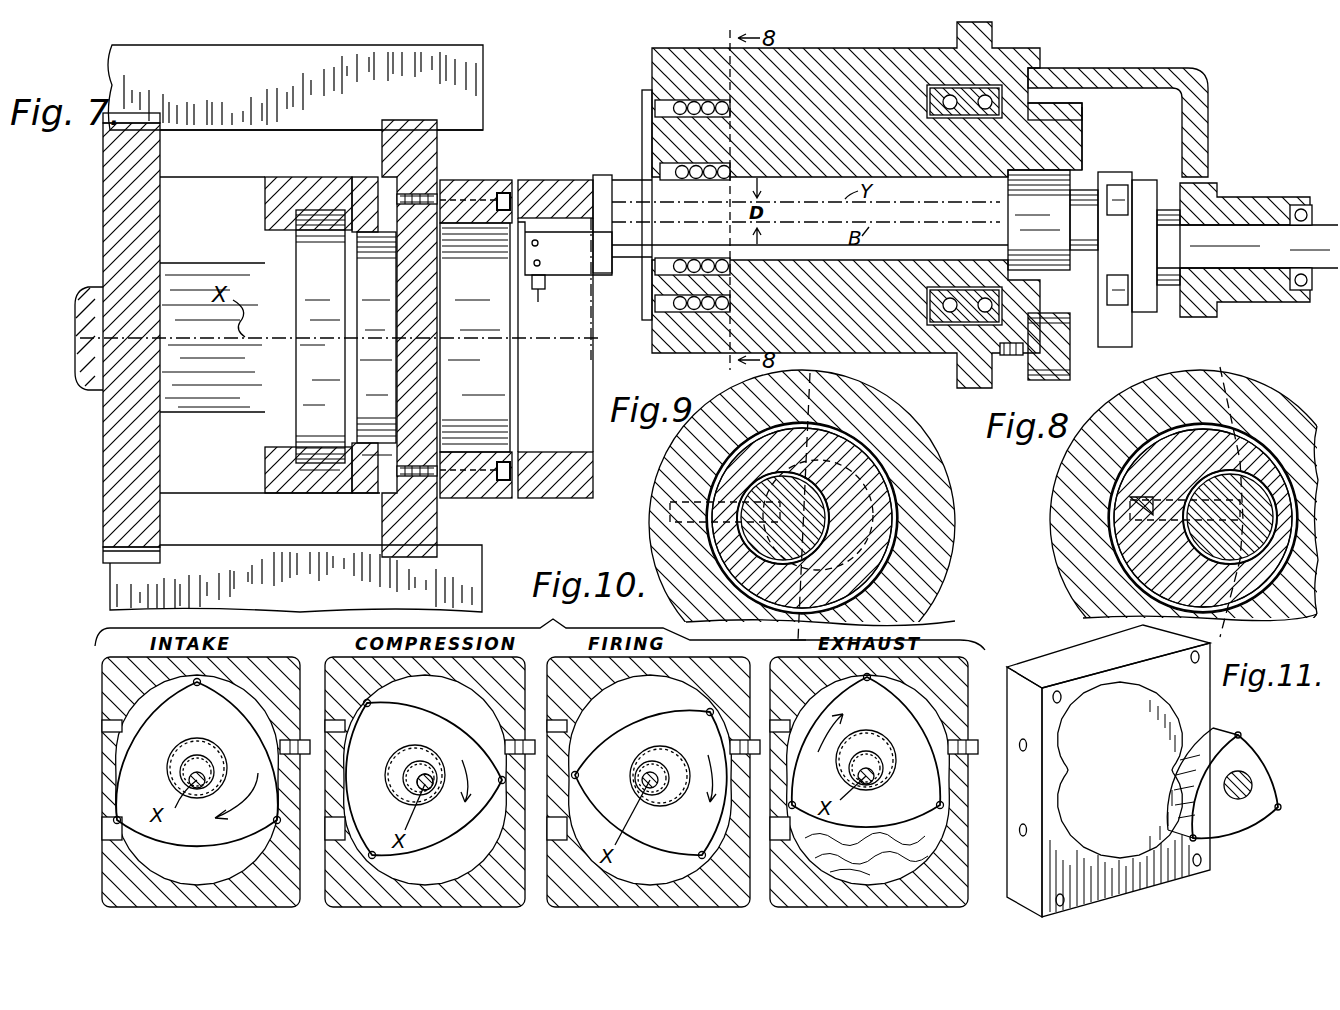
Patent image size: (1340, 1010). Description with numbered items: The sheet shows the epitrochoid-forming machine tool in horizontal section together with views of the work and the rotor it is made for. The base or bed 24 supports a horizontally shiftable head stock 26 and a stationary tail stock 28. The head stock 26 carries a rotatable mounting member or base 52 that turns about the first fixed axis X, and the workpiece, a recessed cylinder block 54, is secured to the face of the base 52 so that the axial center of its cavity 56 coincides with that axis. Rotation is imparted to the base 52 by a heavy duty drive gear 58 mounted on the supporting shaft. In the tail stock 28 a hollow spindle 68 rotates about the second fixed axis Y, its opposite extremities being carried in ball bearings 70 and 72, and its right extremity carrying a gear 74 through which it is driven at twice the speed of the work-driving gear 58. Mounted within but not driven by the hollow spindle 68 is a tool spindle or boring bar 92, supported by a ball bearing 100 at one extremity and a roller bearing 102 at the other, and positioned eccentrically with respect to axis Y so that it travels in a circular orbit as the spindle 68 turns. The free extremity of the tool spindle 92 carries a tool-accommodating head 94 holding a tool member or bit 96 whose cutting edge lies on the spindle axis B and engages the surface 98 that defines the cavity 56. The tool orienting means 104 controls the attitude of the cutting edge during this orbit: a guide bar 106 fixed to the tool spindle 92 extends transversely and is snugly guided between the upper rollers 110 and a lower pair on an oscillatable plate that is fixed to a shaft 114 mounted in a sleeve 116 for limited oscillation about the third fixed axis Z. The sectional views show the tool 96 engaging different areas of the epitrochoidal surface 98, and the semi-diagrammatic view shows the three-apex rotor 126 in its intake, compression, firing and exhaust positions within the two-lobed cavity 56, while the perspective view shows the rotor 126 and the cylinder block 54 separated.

In FIG. 7, the base or bed 24 is at (452, 566).
In FIG. 7, the head stock 26 is at (450, 528).
In FIG. 7, the tail stock 28 is at (1207, 72).
In FIG. 7, the rotatable mounting member or base 52 is at (430, 122).
In FIG. 7, the cylinder block 54 is at (484, 180).
In FIG. 10, the cavity 56 is at (150, 849).
In FIG. 11, the cavity 56 is at (1135, 758).
In FIG. 7, the drive gear 58 is at (162, 213).
In FIG. 7, the hollow spindle 68 is at (886, 297).
In FIG. 9, the hollow spindle 68 is at (865, 481).
In FIG. 7, the ball bearing 70 is at (668, 308).
In FIG. 7, the ball bearing 72 is at (993, 332).
In FIG. 7, the gear 74 is at (1062, 105).
In FIG. 7, the tool spindle or boring bar 92 is at (1002, 176).
In FIG. 9, the tool spindle or boring bar 92 is at (757, 533).
In FIG. 8, the tool spindle or boring bar 92 is at (1145, 569).
In FIG. 7, the tool-accommodating fixture or head 94 is at (571, 262).
In FIG. 7, the tool member or bit 96 is at (538, 303).
In FIG. 9, the tool member or bit 96 is at (672, 505).
In FIG. 8, the tool member or bit 96 is at (1110, 491).
In FIG. 9, the epitrochoidal surface 98 is at (846, 560).
In FIG. 8, the epitrochoidal surface 98 is at (1266, 606).
In FIG. 10, the epitrochoidal surface 98 is at (486, 862).
In FIG. 11, the epitrochoidal surface 98 is at (1182, 716).
In FIG. 7, the ball bearing 100 is at (684, 178).
In FIG. 7, the roller bearing 102 is at (1020, 229).
In FIG. 7, the tool orienting means 104 is at (1151, 182).
In FIG. 7, the guide bar 106 is at (1100, 342).
In FIG. 7, the upper rollers 110 is at (1120, 186).
In FIG. 7, the shaft 114 is at (1268, 258).
In FIG. 7, the sleeve 116 is at (1255, 292).
In FIG. 10, the rotor 126 is at (220, 727).
In FIG. 11, the rotor 126 is at (1180, 790).